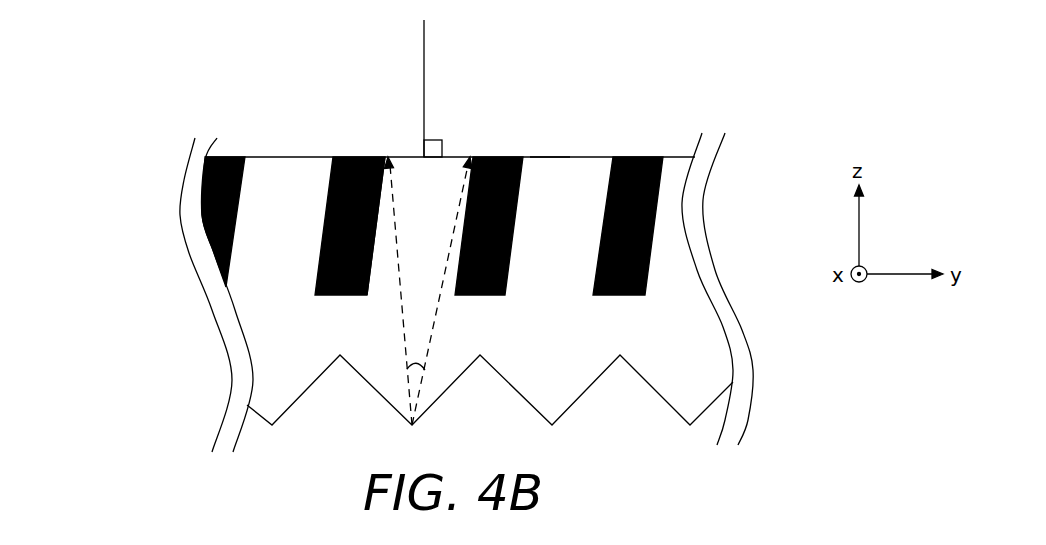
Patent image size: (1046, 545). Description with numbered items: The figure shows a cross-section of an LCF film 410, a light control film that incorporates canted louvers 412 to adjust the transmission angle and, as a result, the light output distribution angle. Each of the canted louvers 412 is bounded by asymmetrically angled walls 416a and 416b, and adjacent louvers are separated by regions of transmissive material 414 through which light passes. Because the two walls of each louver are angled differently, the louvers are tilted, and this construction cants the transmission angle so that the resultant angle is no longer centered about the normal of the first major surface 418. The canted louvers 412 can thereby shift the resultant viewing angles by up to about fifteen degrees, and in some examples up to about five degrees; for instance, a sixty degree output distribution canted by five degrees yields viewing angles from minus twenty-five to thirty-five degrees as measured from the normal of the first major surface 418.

The LCF film 410 is at (172, 78).
The canted louvers 412 is at (333, 158).
The regions of transmissive material 414 is at (430, 202).
The asymmetrically angled wall 416a is at (320, 224).
The asymmetrically angled wall 416b is at (376, 265).
The first major surface 418 is at (545, 148).